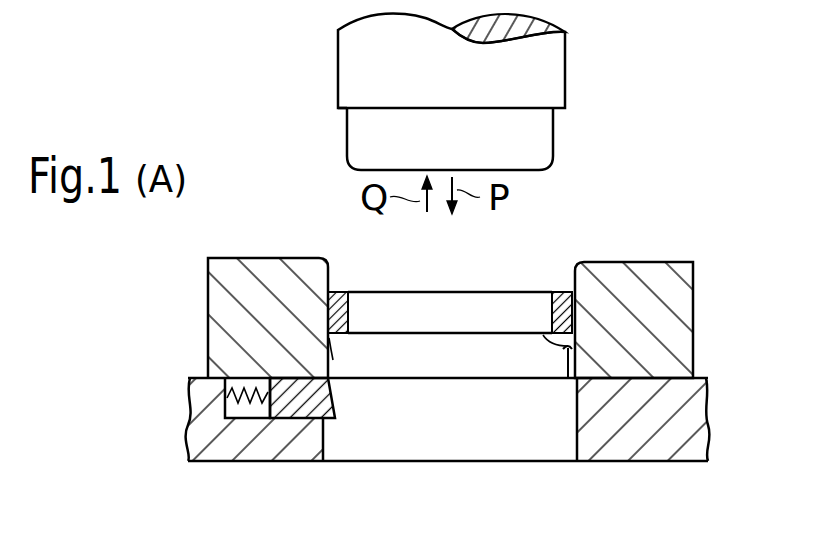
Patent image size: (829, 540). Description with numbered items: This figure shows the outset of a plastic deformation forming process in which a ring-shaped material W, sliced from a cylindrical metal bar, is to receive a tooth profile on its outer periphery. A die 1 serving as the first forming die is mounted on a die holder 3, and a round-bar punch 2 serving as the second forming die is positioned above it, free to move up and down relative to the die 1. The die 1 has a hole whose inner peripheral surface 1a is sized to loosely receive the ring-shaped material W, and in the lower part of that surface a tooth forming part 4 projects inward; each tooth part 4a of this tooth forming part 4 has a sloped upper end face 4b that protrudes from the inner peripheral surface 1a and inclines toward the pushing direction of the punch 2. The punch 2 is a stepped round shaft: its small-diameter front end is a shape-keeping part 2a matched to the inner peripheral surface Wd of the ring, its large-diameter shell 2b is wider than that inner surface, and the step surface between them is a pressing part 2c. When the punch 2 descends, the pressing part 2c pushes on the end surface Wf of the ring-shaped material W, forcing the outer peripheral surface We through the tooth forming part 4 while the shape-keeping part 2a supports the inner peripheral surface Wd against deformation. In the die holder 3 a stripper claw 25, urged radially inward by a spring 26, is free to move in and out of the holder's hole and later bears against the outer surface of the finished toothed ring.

The die 1 is at (248, 290).
The inner peripheral surface 1a is at (333, 290).
The punch 2 is at (454, 91).
The shape-keeping part 2a is at (537, 137).
The shell 2b is at (550, 61).
The pressing part 2c is at (338, 112).
The die holder 3 is at (474, 385).
The tooth forming part 4 is at (340, 376).
The tooth part 4a is at (560, 378).
The upper end face 4b is at (543, 335).
The stripper claw 25 is at (307, 418).
The spring 26 is at (255, 418).
The ring-shaped material W is at (450, 274).
The inner peripheral surface Wd is at (347, 313).
The outer peripheral surface We is at (580, 310).
The end surface Wf is at (560, 292).